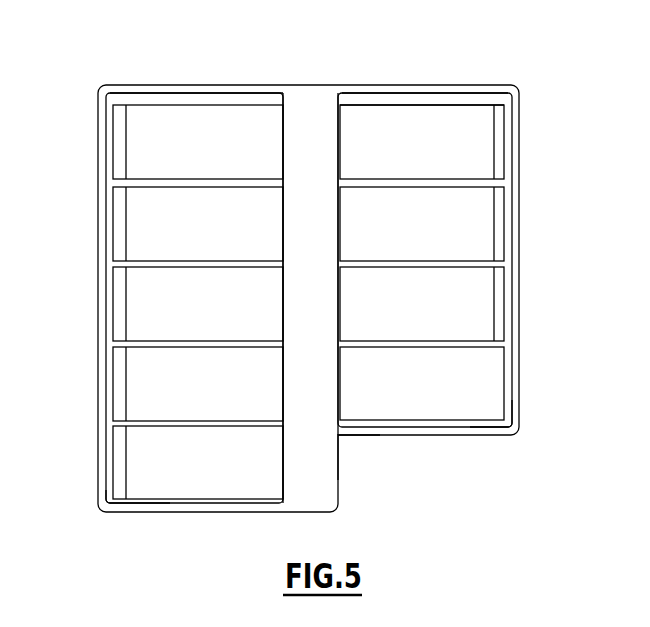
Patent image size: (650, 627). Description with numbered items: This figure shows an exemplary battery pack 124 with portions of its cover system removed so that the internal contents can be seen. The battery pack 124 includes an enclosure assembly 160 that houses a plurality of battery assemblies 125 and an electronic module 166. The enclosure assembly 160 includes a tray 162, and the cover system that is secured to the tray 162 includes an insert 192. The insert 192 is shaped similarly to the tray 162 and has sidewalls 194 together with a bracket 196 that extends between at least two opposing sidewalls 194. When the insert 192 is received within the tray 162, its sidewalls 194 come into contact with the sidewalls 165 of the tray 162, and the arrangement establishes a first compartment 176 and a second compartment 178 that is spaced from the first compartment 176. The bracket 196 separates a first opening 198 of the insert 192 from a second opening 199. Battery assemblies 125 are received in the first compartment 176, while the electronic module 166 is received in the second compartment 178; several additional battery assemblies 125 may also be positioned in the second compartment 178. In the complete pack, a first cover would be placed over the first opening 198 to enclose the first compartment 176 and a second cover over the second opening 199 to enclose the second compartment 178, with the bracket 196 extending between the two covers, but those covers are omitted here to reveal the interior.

The battery pack 124 is at (323, 290).
The battery assemblies 125 is at (180, 159).
The enclosure assembly 160 is at (455, 100).
The tray 162 is at (365, 100).
The sidewalls 165 is at (350, 100).
The electronic module 166 is at (394, 401).
The first compartment 176 is at (158, 498).
The second compartment 178 is at (487, 423).
The insert 192 is at (340, 437).
The sidewalls 194 is at (227, 90).
The bracket 196 is at (291, 292).
The first opening 198 is at (167, 100).
The second opening 199 is at (425, 115).